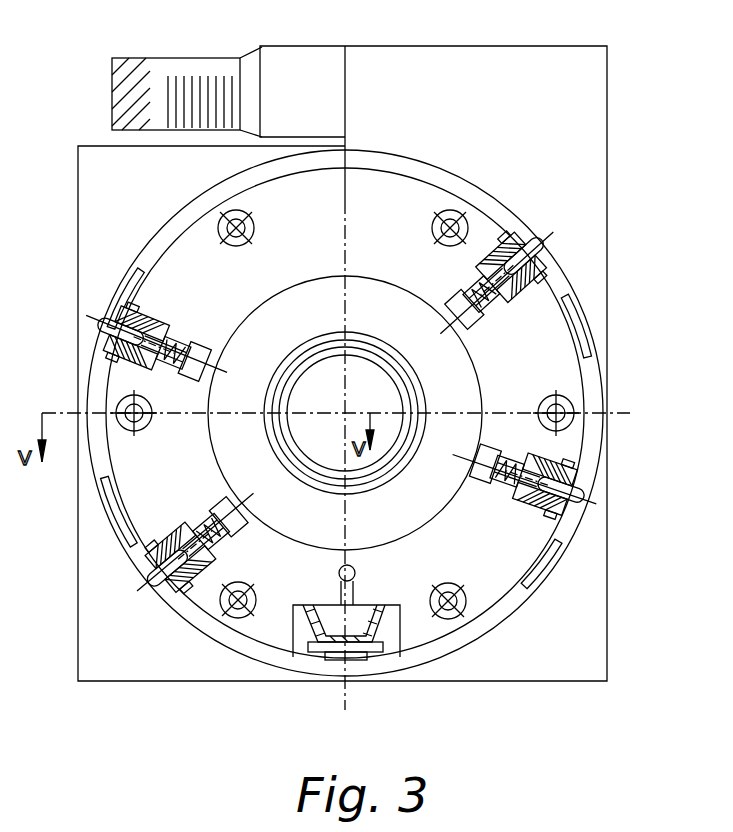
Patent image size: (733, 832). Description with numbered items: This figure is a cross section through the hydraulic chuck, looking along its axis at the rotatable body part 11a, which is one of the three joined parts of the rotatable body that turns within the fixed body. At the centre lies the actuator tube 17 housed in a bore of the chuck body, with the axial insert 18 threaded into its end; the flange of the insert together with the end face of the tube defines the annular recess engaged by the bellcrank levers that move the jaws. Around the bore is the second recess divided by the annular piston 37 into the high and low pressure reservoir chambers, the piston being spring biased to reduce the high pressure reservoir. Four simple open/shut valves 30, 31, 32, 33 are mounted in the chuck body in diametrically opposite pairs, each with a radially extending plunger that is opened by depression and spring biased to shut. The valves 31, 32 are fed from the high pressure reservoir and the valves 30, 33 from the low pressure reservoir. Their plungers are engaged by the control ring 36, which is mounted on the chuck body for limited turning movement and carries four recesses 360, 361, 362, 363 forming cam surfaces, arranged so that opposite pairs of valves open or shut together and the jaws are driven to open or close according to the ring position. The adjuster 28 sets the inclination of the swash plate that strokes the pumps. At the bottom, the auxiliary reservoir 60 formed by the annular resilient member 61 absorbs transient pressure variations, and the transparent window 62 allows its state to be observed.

The adjuster 28 is at (282, 63).
The control ring 36 is at (357, 158).
The rotatable body part 11a is at (400, 198).
The valve 32 is at (525, 225).
The valve 31 is at (127, 317).
The valve 33 is at (557, 505).
The valve 30 is at (160, 557).
The annular piston 37 is at (337, 300).
The actuator tube 17 is at (310, 345).
The axial insert 18 is at (298, 373).
The recess 361 is at (125, 290).
The recess 362 is at (567, 317).
The recess 363 is at (555, 540).
The recess 360 is at (118, 518).
The auxiliary reservoir 60 is at (358, 620).
The annular resilient member 61 is at (313, 628).
The transparent window 62 is at (360, 653).